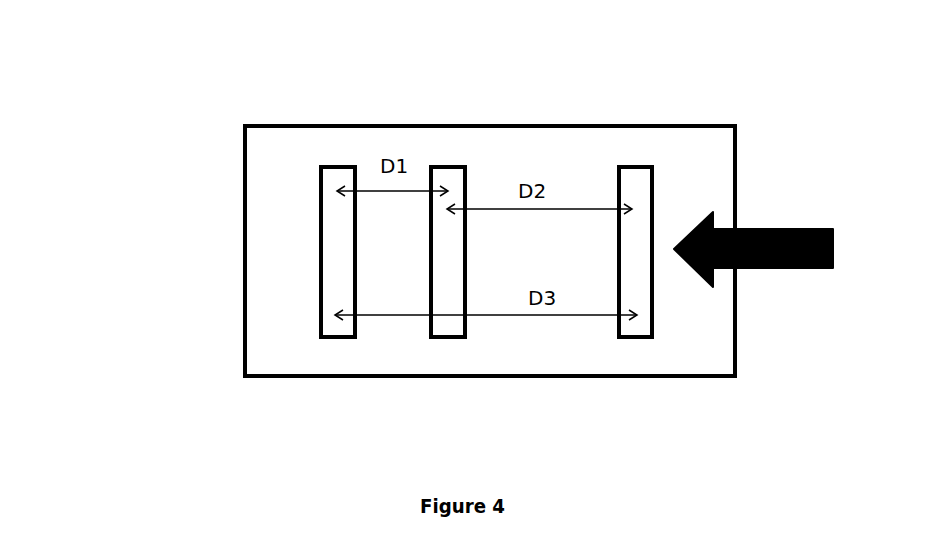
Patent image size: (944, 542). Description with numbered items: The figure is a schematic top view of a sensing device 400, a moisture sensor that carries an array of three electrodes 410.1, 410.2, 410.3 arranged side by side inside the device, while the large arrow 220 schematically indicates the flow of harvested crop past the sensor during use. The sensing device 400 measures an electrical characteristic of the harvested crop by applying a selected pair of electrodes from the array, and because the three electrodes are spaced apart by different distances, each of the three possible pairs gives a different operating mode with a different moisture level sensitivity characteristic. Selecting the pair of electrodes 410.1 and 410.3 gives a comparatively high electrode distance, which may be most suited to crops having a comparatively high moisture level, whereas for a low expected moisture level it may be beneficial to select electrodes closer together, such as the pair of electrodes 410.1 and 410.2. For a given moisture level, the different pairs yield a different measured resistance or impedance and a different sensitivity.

The sensing device 400 is at (189, 93).
The electrode 410.1 is at (334, 241).
The electrode 410.2 is at (446, 326).
The electrode 410.3 is at (638, 182).
The applied force 220 is at (773, 228).